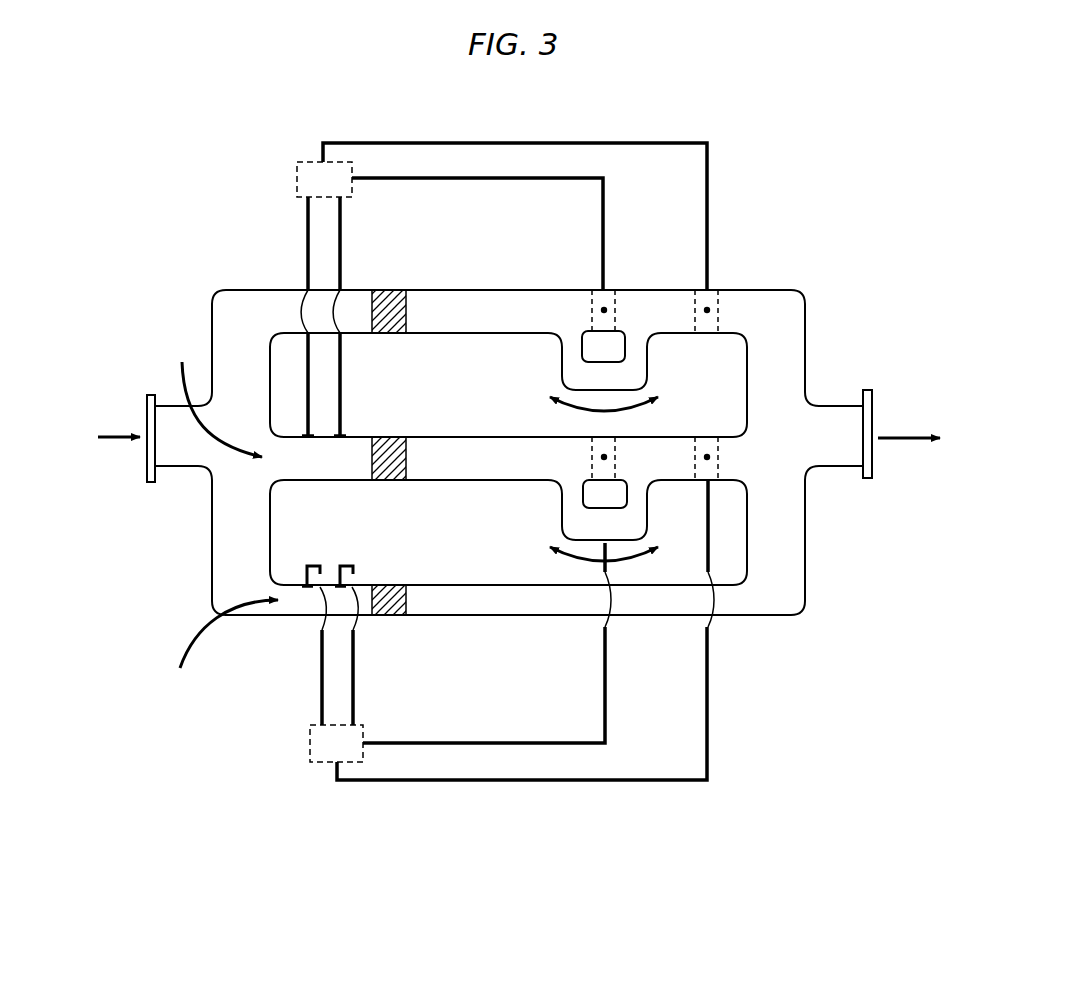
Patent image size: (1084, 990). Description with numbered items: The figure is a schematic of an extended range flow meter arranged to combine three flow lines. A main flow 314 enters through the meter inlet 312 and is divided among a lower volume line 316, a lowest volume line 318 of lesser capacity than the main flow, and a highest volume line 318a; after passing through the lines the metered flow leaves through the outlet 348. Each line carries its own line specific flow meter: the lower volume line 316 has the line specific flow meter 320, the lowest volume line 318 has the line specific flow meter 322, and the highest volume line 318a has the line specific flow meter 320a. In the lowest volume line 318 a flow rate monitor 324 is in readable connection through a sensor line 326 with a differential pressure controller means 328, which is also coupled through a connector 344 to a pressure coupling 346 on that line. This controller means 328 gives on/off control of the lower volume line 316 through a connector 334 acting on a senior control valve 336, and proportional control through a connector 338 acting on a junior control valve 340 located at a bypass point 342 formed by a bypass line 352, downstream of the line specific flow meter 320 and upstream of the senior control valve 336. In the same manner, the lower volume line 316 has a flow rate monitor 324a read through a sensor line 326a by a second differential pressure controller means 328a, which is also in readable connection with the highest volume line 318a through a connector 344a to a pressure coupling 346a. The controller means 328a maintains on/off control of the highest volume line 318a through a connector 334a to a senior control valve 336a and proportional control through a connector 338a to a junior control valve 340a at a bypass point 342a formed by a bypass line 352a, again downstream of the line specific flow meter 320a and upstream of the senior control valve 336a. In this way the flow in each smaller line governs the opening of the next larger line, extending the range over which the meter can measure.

The meter inlet 312 is at (150, 483).
The main flow 314 is at (100, 439).
The lower volume line 316 is at (213, 396).
The lowest volume line 318 is at (217, 650).
The highest volume line 318a is at (292, 312).
The line specific flow meter 320 is at (398, 437).
The line specific flow meter 320a is at (398, 290).
The line specific flow meter 322 is at (392, 585).
The flow rate monitor 324 is at (342, 566).
The flow rate monitor 324a is at (341, 433).
The sensor line 326 is at (356, 653).
The sensor line 326a is at (340, 263).
The differential pressure controller means 328 is at (325, 763).
The differential pressure controller means 328a is at (300, 163).
The connector 334 is at (709, 705).
The connector 334a is at (660, 143).
The senior control valve 336 is at (710, 437).
The senior control valve 336a is at (707, 310).
The connector 338 is at (606, 692).
The connector 338a is at (433, 180).
The junior control valve 340 is at (592, 457).
The junior control valve 340a is at (604, 310).
The bypass point 342 is at (616, 556).
The bypass point 342a is at (683, 458).
The connector 344 is at (320, 653).
The connector 344a is at (306, 228).
The pressure coupling 346 is at (305, 578).
The pressure coupling 346a is at (306, 428).
The outlet 348 is at (868, 480).
The bypass line 352 is at (580, 497).
The bypass line 352a is at (576, 351).